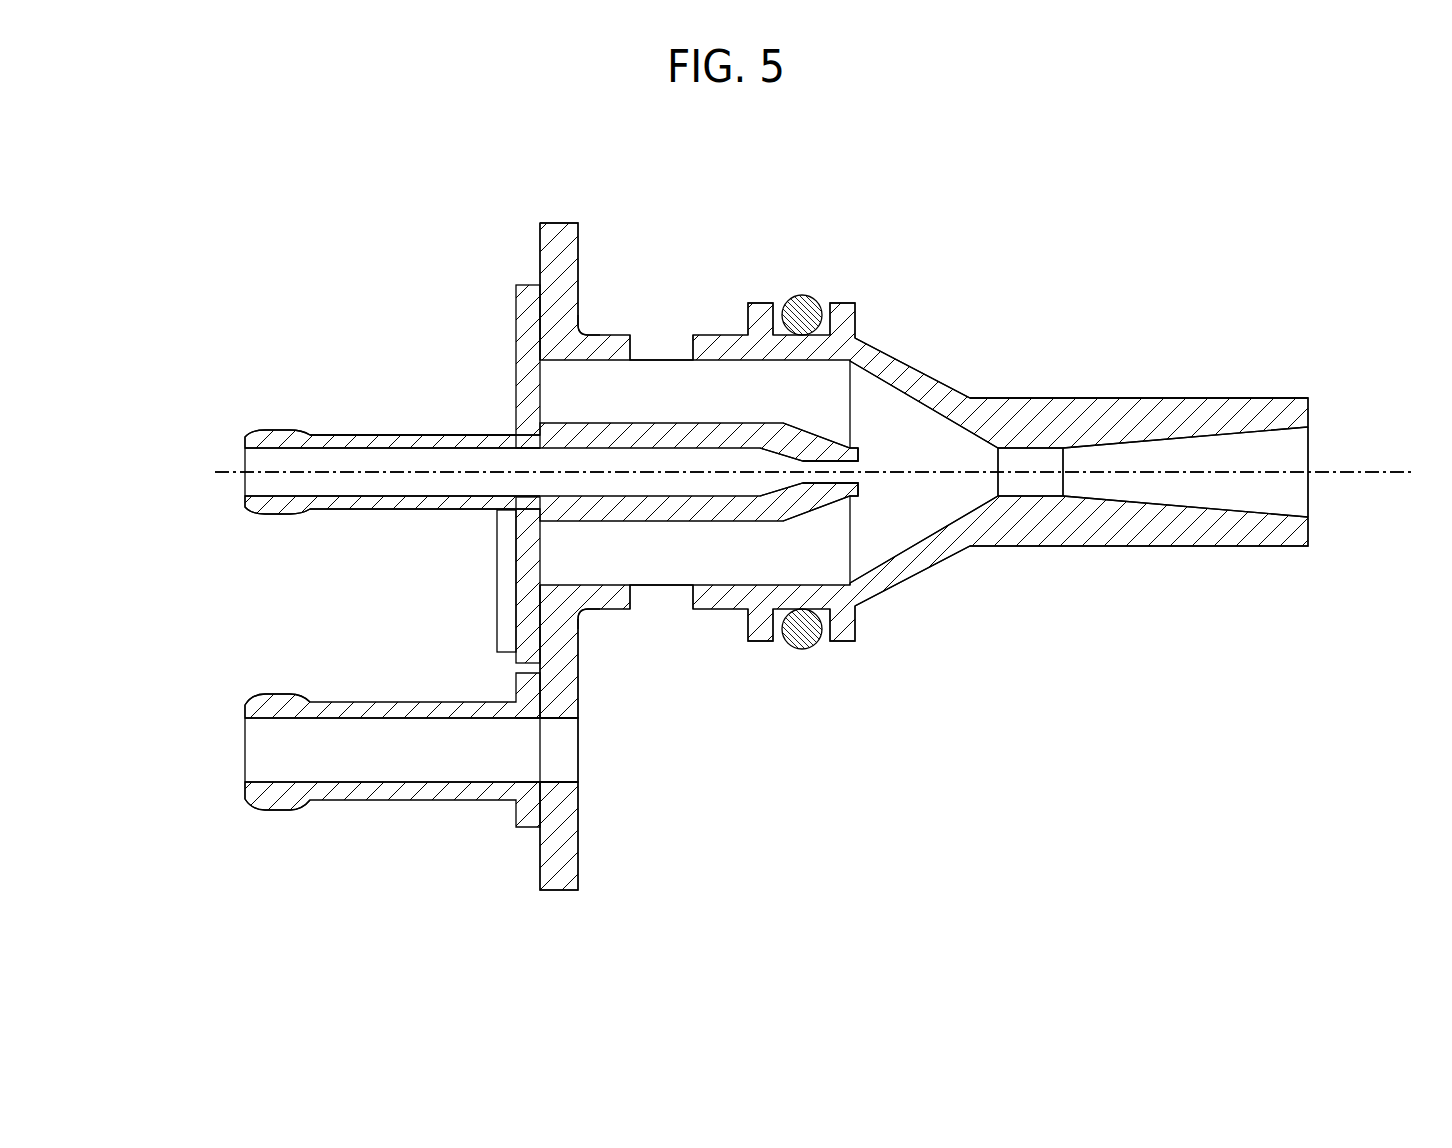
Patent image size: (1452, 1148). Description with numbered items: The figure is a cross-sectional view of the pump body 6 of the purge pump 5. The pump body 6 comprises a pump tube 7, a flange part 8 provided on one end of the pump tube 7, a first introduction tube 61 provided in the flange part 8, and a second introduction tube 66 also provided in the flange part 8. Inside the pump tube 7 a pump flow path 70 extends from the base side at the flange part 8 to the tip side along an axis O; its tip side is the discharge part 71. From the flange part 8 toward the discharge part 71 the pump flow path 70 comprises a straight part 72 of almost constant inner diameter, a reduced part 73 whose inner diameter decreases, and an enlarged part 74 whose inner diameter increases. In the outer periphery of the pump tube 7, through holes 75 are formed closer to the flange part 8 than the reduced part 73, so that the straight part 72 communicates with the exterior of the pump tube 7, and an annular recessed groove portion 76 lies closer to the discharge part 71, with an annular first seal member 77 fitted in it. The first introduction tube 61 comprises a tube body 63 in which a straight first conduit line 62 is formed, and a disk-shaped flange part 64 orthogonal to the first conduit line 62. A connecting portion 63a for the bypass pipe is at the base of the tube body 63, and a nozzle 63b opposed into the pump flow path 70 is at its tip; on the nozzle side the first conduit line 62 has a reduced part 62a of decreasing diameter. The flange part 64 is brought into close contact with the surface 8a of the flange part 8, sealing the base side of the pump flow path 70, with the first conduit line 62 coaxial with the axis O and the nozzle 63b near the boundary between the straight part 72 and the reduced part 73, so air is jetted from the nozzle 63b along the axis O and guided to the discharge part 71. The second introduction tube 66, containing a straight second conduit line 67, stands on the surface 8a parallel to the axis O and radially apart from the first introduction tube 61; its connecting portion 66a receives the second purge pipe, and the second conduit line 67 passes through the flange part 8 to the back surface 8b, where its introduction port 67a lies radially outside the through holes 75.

The purge pump 5 is at (1262, 157).
The pump body 6 is at (1147, 240).
The pump tube 7 is at (1035, 390).
The flange part 8 is at (556, 240).
The surface of the flange part 8a is at (520, 286).
The back surface of the flange part 8b is at (582, 290).
The first introduction tube 61 is at (336, 345).
The first conduit line 62 is at (283, 458).
The reduced part 62a is at (797, 488).
The tube body 63 is at (412, 440).
The connecting portion 63a is at (285, 432).
The nozzle 63b is at (856, 477).
The flange part 64 is at (523, 590).
The second introduction tube 66 is at (423, 800).
The connecting portion 66a is at (285, 803).
The second conduit line 67 is at (280, 748).
The introduction port 67a is at (570, 750).
The pump flow path 70 is at (978, 515).
The discharge part 71 is at (1310, 493).
The straight part 72 is at (718, 398).
The reduced part 73 is at (905, 400).
The enlarged part 74 is at (1210, 452).
The through holes 75 is at (648, 352).
The groove portion 76 is at (782, 322).
The first seal member 77 is at (813, 302).
The axis O is at (1385, 465).